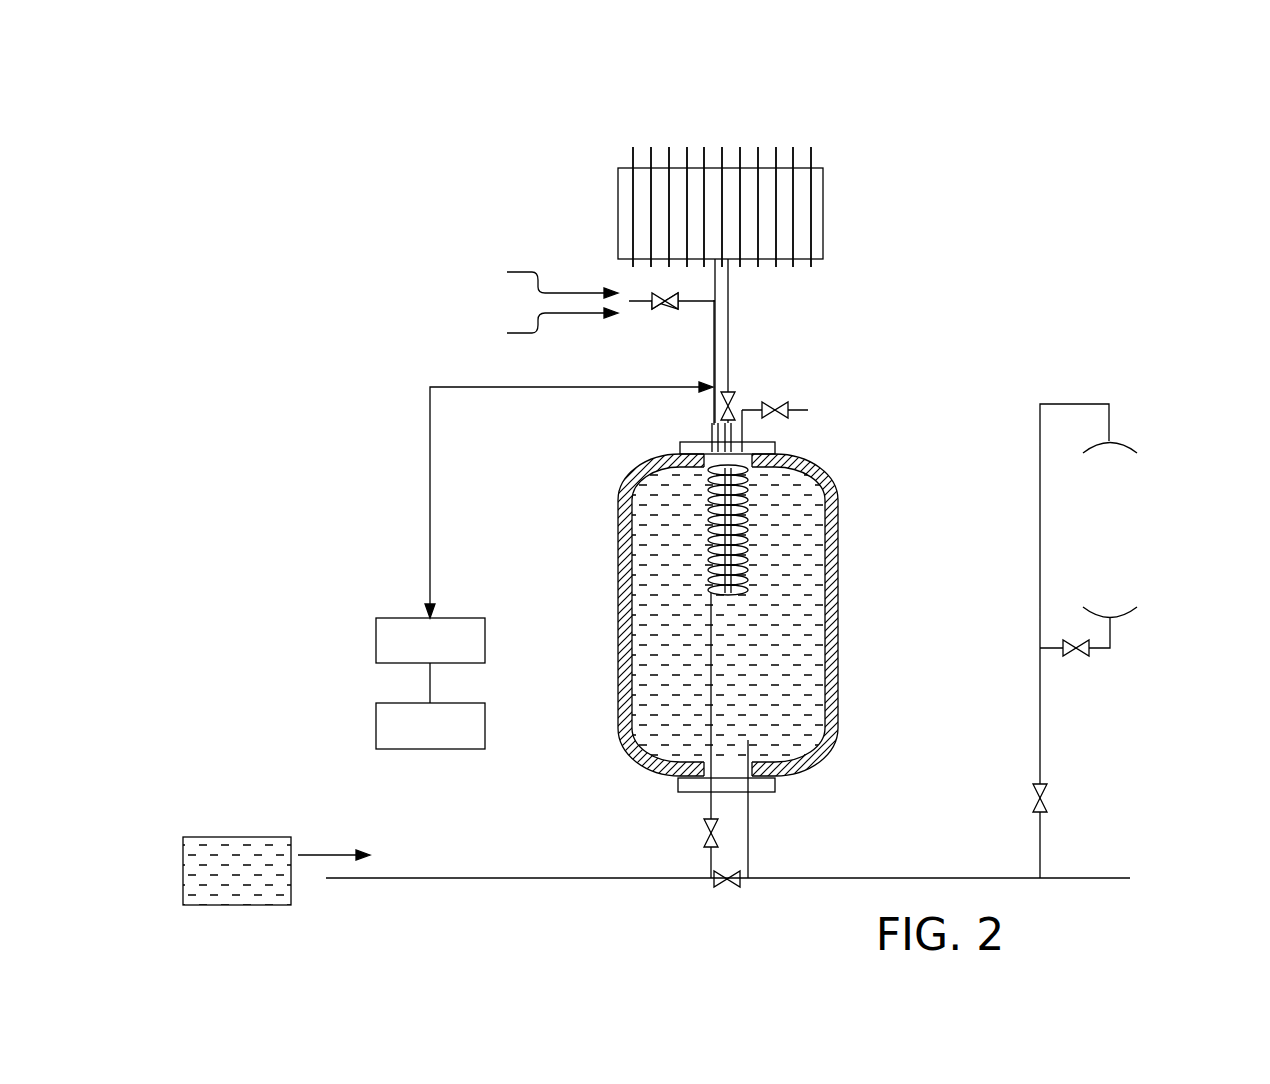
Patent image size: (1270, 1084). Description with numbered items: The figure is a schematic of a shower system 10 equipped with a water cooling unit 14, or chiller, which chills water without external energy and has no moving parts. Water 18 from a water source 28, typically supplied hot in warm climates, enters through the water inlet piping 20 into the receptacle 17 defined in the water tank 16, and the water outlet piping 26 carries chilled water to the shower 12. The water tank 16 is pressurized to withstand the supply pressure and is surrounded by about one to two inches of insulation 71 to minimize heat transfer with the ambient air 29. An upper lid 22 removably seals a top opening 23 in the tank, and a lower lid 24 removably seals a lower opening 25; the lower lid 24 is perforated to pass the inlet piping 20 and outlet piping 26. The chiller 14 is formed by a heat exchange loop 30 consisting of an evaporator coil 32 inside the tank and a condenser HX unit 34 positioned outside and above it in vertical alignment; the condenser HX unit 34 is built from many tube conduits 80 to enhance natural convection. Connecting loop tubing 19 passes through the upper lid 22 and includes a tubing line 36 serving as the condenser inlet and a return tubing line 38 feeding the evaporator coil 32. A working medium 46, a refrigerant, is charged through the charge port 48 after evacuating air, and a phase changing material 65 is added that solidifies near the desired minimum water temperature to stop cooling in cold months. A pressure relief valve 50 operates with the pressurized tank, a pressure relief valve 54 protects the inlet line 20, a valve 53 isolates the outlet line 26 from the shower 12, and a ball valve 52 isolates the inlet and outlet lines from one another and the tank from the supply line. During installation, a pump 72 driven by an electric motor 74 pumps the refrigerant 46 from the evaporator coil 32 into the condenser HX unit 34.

The system 10 is at (963, 248).
The shower 12 is at (1140, 525).
The water cooling unit 14 is at (524, 371).
The water tank 16 is at (838, 657).
The receptacle 17 is at (663, 572).
The water 18 is at (768, 628).
The connecting loop tubing 19 is at (723, 350).
The water inlet piping 20 is at (740, 637).
The upper lid 22 is at (775, 452).
The top opening 23 is at (706, 474).
The lower lid 24 is at (773, 790).
The lower opening 25 is at (725, 760).
The water outlet piping 26 is at (908, 878).
The water source 28 is at (235, 837).
The ambient air 29 is at (862, 184).
The heat exchange loop 30 is at (652, 397).
The evaporator coil 32 is at (745, 527).
The condenser HX unit 34 is at (662, 113).
The tubing line 36 is at (705, 317).
The return tubing line 38 is at (728, 330).
The working medium 46 is at (520, 272).
The charge port 48 is at (677, 280).
The pressure relief valve 50 is at (772, 405).
The ball valve 52 is at (723, 887).
The valve 53 is at (1048, 800).
The pressure relief valve 54 is at (705, 830).
The phase changing material 65 is at (508, 333).
The insulation 71 is at (817, 757).
The pump 72 is at (375, 638).
The electric motor 74 is at (375, 725).
The tube conduits 80 is at (812, 158).